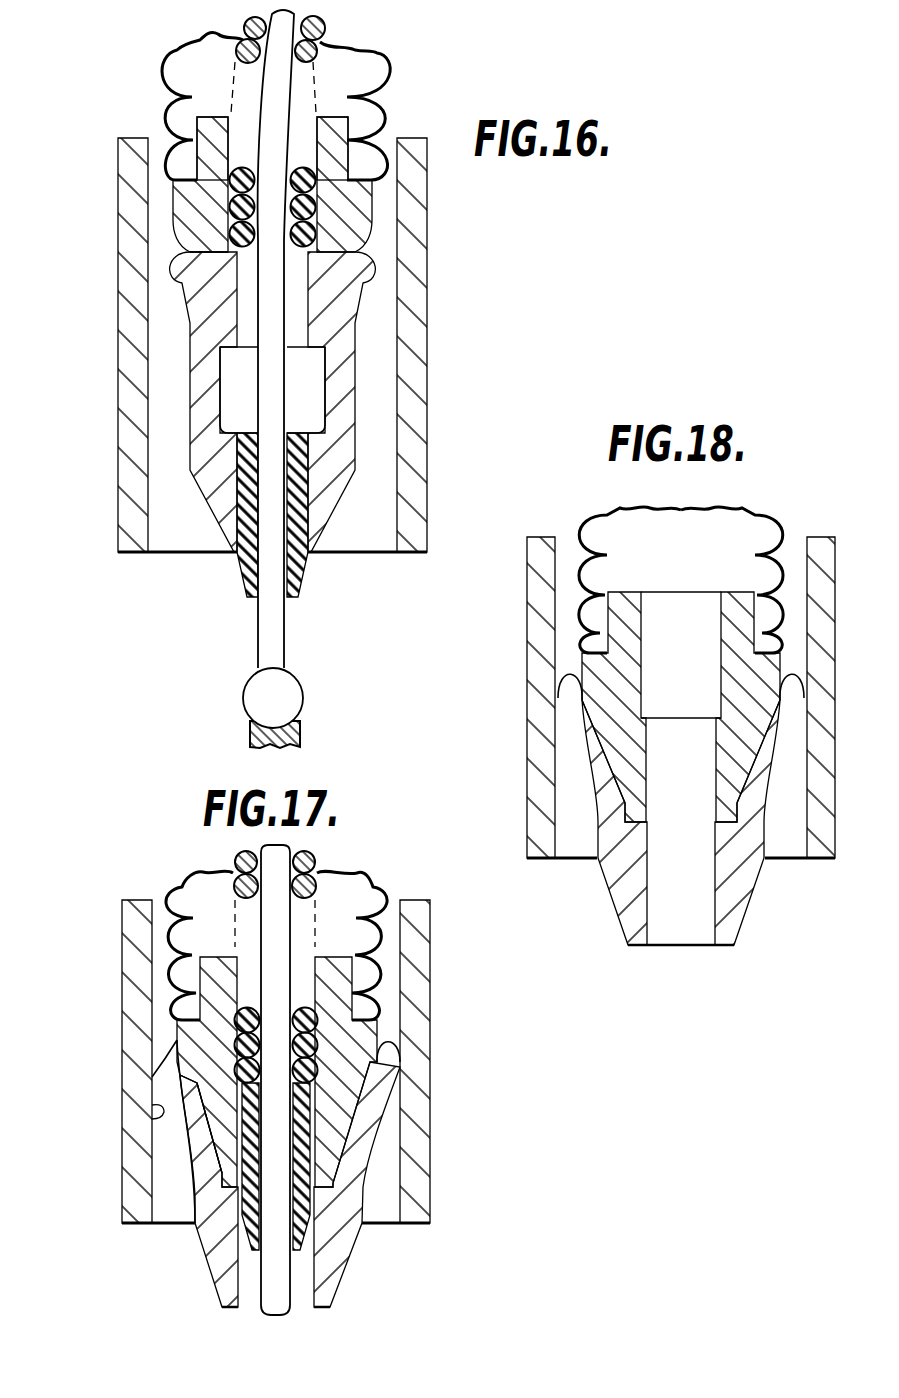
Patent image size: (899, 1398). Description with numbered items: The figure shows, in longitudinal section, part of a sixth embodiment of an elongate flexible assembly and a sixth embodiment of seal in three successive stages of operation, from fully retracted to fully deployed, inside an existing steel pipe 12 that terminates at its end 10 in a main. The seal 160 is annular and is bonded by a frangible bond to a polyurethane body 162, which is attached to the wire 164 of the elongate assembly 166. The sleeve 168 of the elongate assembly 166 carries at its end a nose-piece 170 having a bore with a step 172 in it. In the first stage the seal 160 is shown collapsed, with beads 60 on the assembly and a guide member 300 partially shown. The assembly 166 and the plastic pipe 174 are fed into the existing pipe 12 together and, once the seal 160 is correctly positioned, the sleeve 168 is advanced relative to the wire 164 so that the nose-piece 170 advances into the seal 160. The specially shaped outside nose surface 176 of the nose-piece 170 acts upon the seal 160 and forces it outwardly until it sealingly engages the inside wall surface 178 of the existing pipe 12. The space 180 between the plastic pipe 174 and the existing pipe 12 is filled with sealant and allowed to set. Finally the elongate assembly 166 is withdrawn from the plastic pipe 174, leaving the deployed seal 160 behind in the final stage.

In FIG. 16, the end 10 is at (417, 553).
In FIG. 17, the end 10 is at (417, 1223).
In FIG. 18, the end 10 is at (820, 858).
In FIG. 16, the existing steel pipe 12 is at (420, 193).
In FIG. 17, the existing steel pipe 12 is at (422, 964).
In FIG. 18, the existing steel pipe 12 is at (818, 553).
In FIG. 16, the beads 60 is at (297, 689).
In FIG. 16, the seal 160 is at (347, 387).
In FIG. 17, the seal 160 is at (365, 1117).
In FIG. 18, the seal 160 is at (630, 853).
In FIG. 16, the body 162 is at (306, 580).
In FIG. 17, the body 162 is at (252, 1232).
In FIG. 16, the wire 164 is at (261, 623).
In FIG. 16, the elongate assembly 166 is at (303, 101).
In FIG. 16, the sleeve 168 is at (193, 120).
In FIG. 16, the nose-piece 170 is at (187, 208).
In FIG. 18, the nose-piece 170 is at (737, 633).
In FIG. 16, the step 172 is at (228, 251).
In FIG. 16, the plastic pipe 174 is at (183, 48).
In FIG. 17, the plastic pipe 174 is at (195, 975).
In FIG. 17, the outside nose surface 176 is at (211, 1131).
In FIG. 17, the inside wall surface 178 is at (152, 1118).
In FIG. 17, the space 180 is at (170, 927).
In FIG. 16, the guide member 300 is at (255, 729).